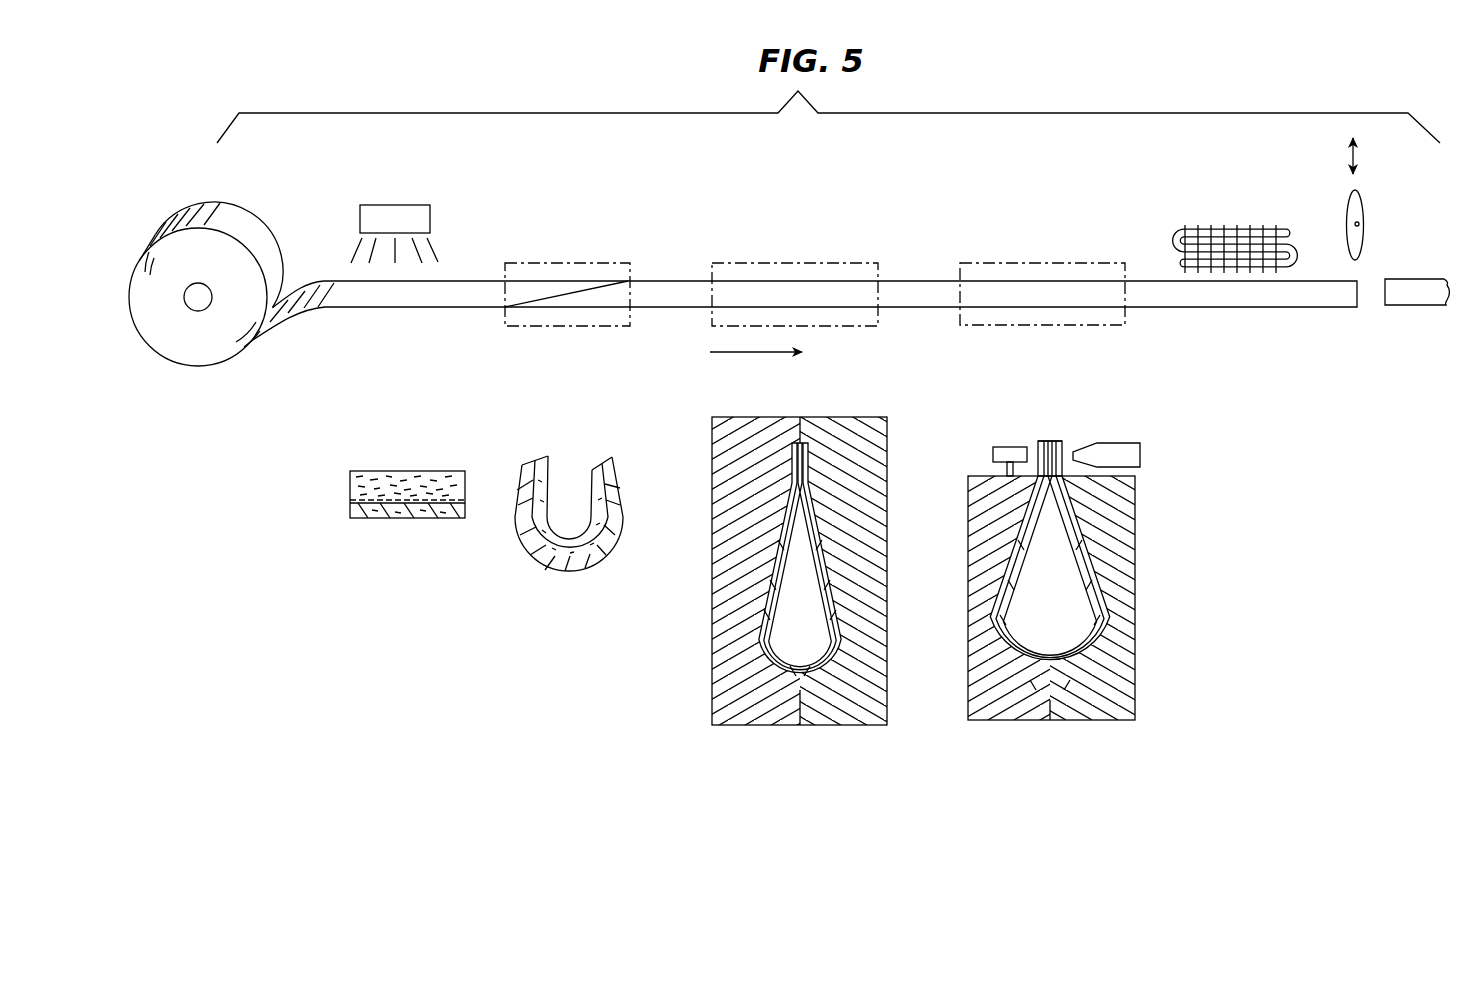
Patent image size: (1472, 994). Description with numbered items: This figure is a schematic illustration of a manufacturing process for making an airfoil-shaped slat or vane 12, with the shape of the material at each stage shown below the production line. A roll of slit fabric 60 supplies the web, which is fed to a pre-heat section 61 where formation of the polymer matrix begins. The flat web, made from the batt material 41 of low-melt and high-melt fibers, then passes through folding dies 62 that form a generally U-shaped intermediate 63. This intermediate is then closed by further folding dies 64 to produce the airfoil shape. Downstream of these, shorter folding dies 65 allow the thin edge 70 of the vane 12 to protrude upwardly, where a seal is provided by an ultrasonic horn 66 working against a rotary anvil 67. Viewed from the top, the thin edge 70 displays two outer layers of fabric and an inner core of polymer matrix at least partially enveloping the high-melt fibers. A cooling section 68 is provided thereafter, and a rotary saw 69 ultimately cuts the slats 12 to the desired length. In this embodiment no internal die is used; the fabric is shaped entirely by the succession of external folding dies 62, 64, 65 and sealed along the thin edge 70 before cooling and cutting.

The vane 12 is at (1401, 307).
The batt material 41 is at (381, 524).
The roll of slit fabric 60 is at (238, 219).
The pre-heat section 61 is at (402, 201).
The folding dies 62 is at (598, 262).
The U-shaped intermediate 63 is at (544, 572).
The folding dies 64 is at (798, 262).
The shorter folding dies 65 is at (1037, 262).
The ultrasonic horn 66 is at (1114, 443).
The rotary anvil 67 is at (1004, 447).
The cooling section 68 is at (1247, 217).
The rotary saw 69 is at (1365, 196).
The thin edge 70 is at (1064, 441).